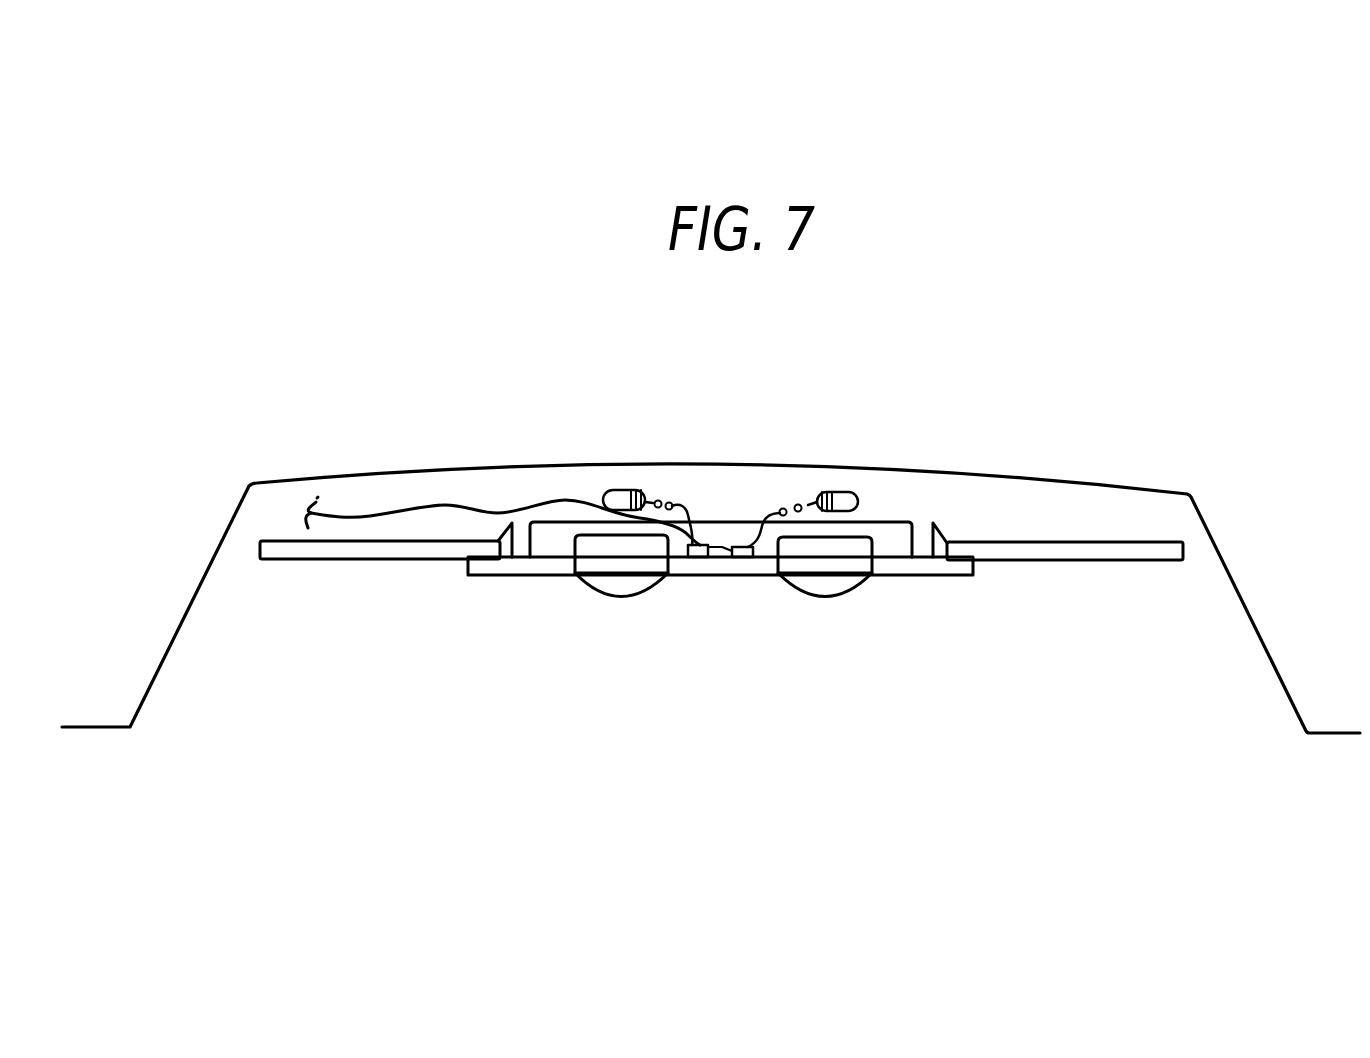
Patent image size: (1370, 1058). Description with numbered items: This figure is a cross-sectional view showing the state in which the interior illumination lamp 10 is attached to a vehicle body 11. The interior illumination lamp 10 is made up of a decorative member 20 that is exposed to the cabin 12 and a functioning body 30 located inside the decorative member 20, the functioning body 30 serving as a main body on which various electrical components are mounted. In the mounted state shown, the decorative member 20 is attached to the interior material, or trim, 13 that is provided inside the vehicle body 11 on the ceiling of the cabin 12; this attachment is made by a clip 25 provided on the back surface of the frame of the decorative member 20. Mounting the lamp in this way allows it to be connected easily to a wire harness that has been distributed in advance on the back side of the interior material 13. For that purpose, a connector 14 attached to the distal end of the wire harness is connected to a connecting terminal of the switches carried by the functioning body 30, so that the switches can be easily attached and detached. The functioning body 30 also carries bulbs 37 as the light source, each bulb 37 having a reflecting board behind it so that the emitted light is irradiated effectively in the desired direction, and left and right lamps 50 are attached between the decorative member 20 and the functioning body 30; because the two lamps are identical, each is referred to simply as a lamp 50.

The interior illumination lamp 10 is at (571, 624).
The vehicle body 11 is at (1093, 467).
The cabin 12 is at (752, 700).
The interior material (trim) 13 is at (1155, 560).
The connector 14 is at (710, 522).
The decorative member 20 is at (912, 590).
The clip 25 is at (500, 525).
The functioning body 30 is at (898, 508).
The bulb 37 is at (618, 490).
The lamp 50 is at (659, 610).